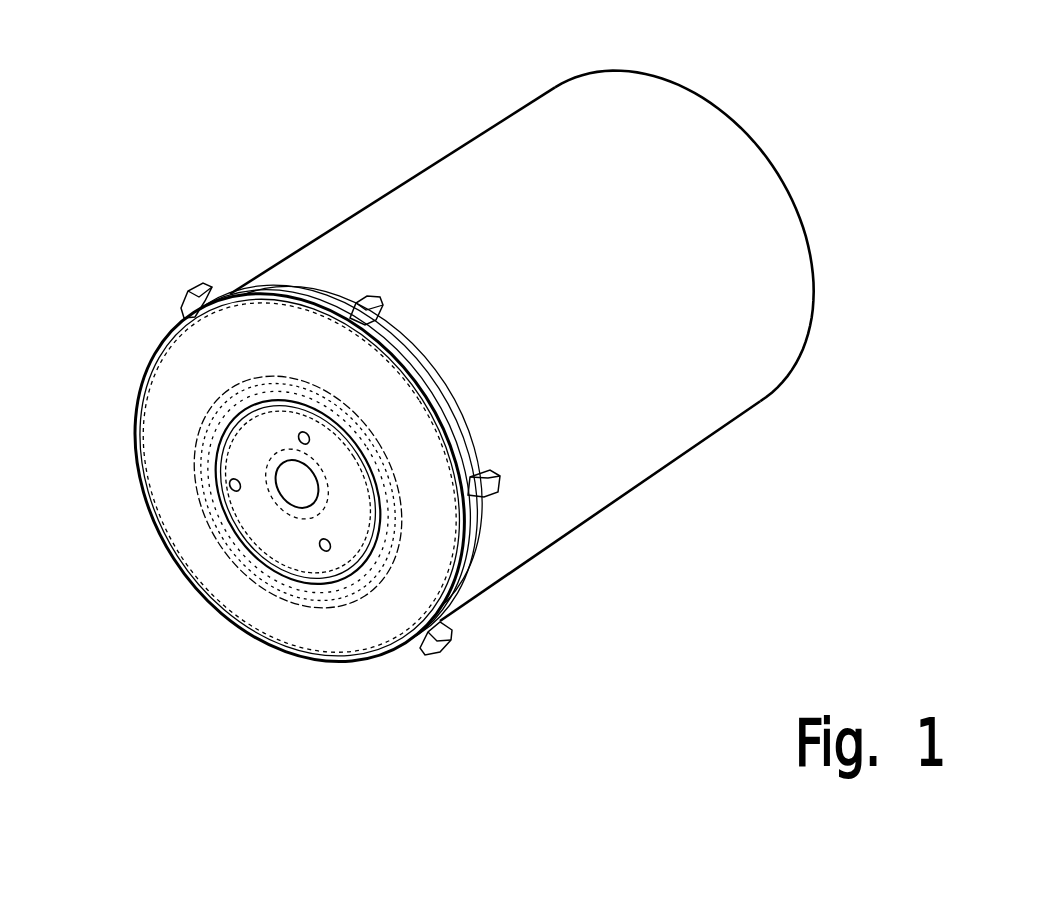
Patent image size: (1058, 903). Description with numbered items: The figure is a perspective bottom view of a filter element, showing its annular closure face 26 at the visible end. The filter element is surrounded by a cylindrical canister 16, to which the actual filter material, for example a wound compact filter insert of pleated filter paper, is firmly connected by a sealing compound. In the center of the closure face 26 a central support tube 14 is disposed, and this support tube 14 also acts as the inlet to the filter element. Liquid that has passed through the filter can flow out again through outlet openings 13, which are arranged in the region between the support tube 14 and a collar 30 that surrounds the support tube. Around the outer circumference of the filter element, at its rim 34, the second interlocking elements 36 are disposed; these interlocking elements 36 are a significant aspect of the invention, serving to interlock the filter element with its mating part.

The cylindrical canister 16 is at (440, 188).
The second interlocking elements 36 is at (188, 300).
The flange ring 34 is at (146, 356).
The outlet openings 13 is at (220, 425).
The collar 30 is at (186, 488).
The central support tube 14 is at (278, 495).
The annular closure face 26 is at (222, 612).